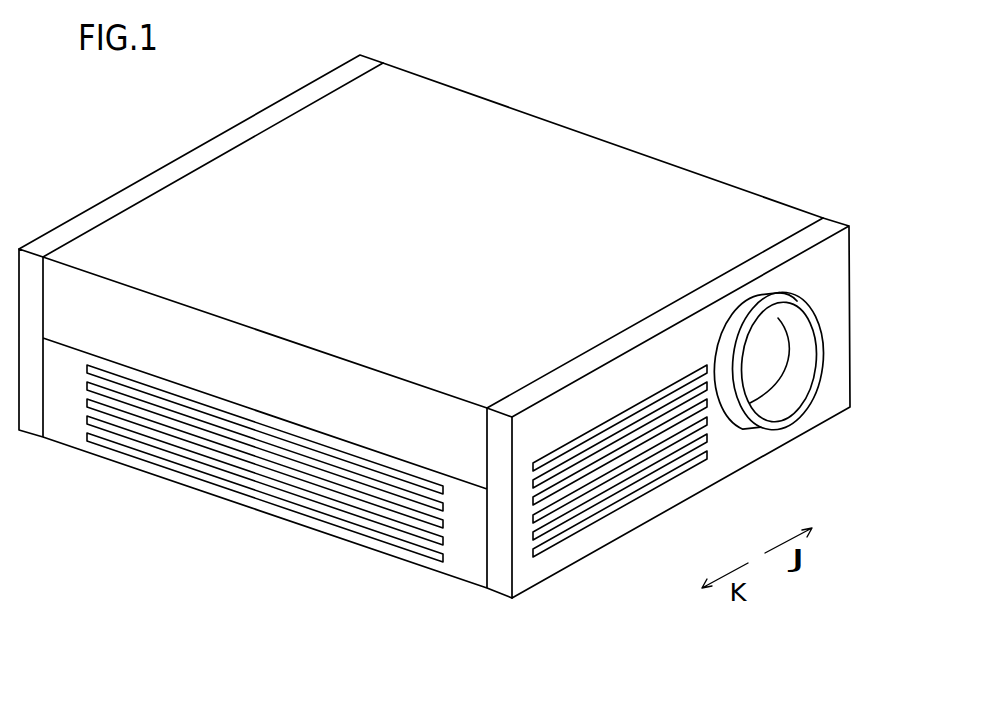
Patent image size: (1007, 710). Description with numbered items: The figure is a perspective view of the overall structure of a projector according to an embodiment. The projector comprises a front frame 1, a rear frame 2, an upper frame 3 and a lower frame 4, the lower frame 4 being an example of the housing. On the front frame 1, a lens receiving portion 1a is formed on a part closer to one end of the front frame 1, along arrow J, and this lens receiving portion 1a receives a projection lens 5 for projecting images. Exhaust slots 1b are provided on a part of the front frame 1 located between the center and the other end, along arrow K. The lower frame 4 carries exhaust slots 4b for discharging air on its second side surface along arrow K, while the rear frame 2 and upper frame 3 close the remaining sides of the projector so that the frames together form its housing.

The front frame 1 is at (722, 450).
The lens receiving portion 1a is at (782, 293).
The exhaust slots 1b is at (623, 510).
The rear frame 2 is at (237, 133).
The upper frame 3 is at (583, 170).
The lower frame 4 is at (460, 557).
The exhaust slots 4b is at (278, 505).
The projection lens 5 is at (760, 363).